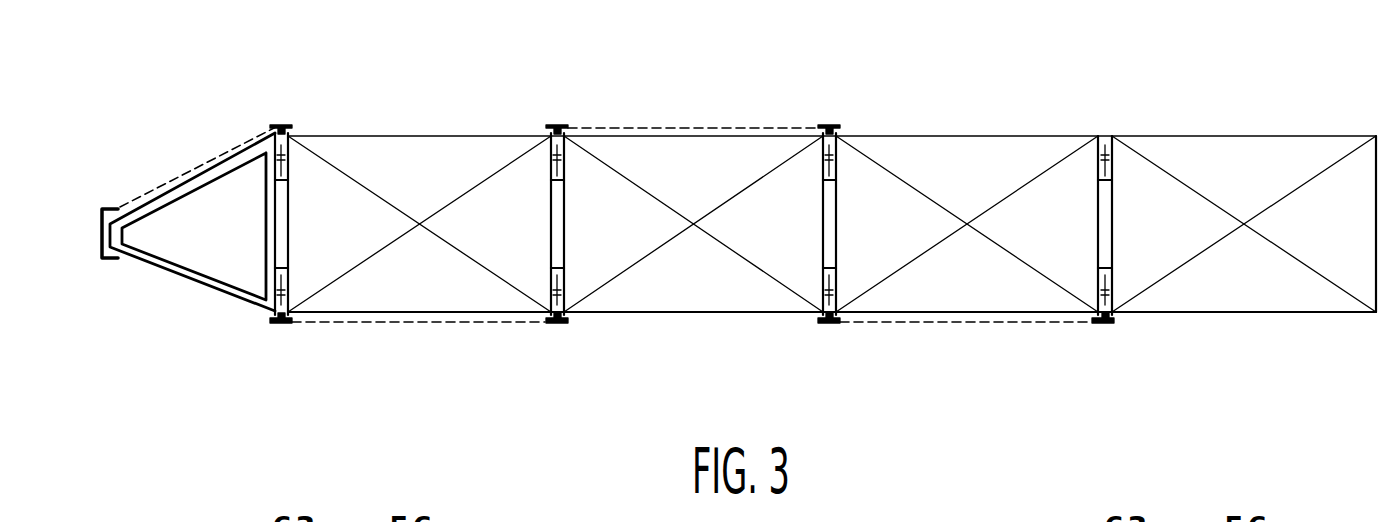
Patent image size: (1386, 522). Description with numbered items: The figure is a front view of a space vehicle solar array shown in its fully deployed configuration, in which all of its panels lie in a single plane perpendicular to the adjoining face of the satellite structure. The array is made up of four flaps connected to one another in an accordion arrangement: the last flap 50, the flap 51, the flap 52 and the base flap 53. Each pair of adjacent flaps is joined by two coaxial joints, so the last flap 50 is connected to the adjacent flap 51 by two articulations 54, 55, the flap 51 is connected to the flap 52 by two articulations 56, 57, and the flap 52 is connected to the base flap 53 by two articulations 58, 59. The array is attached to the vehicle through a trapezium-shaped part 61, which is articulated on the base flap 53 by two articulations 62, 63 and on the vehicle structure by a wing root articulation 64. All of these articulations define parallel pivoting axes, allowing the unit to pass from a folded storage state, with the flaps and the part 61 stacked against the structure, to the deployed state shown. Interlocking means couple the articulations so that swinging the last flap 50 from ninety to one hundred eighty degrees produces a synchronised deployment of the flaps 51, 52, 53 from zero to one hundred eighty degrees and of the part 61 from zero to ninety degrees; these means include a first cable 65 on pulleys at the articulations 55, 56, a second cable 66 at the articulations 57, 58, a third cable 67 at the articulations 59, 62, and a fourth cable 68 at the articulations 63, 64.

The last flap 50 is at (1288, 160).
The flap 51 is at (1002, 167).
The flap 52 is at (710, 292).
The base flap 53 is at (457, 172).
The articulation 54 is at (1109, 160).
The articulation 55 is at (1109, 291).
The articulation 56 is at (840, 291).
The articulation 57 is at (839, 160).
The articulation 58 is at (567, 162).
The articulation 59 is at (566, 298).
The trapezium-shaped part 61 is at (207, 178).
The articulation 62 is at (278, 286).
The articulation 63 is at (284, 163).
The wing root articulation 64 is at (107, 207).
The first cable 65 is at (968, 323).
The second cable 66 is at (718, 128).
The third cable 67 is at (422, 325).
The fourth cable 68 is at (237, 147).